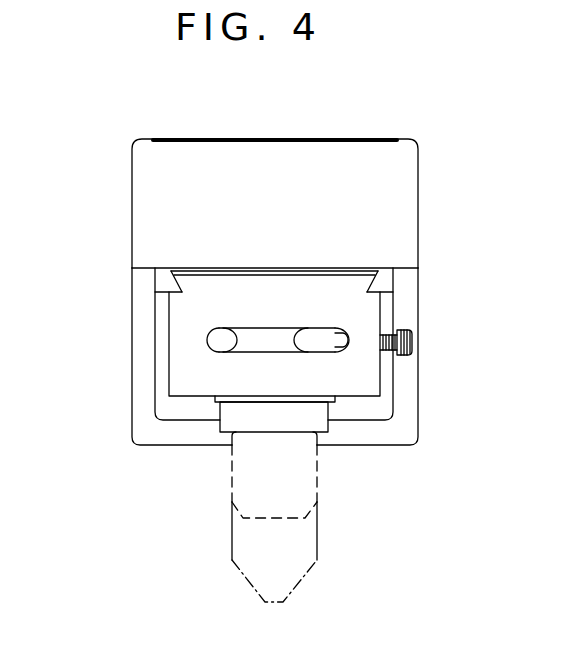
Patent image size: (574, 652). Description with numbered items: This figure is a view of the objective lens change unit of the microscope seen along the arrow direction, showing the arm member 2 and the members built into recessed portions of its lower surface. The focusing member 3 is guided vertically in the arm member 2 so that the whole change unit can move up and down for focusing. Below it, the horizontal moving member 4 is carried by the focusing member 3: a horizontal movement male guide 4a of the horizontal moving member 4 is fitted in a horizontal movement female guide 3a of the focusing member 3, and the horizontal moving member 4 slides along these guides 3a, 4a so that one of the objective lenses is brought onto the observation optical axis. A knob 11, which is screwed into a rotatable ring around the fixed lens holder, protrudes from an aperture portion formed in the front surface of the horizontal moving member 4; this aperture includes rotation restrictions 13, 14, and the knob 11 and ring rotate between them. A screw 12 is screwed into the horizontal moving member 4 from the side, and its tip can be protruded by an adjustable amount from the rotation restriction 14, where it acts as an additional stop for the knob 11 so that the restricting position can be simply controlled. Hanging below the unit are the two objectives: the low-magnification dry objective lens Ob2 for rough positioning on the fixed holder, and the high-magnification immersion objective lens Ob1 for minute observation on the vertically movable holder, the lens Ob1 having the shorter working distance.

The arm member 2 is at (165, 193).
The focusing member 3 is at (378, 407).
The horizontal movement female guide 3a is at (380, 292).
The horizontal moving member 4 is at (187, 371).
The horizontal movement male guide 4a is at (362, 282).
The knob 11 is at (325, 340).
The screw 12 is at (397, 352).
The rotation restriction 13 is at (213, 340).
The rotation restriction 14 is at (333, 351).
The low-magnification dry objective lens Ob2 is at (255, 472).
The high-magnification immersion objective lens Ob1 is at (255, 541).